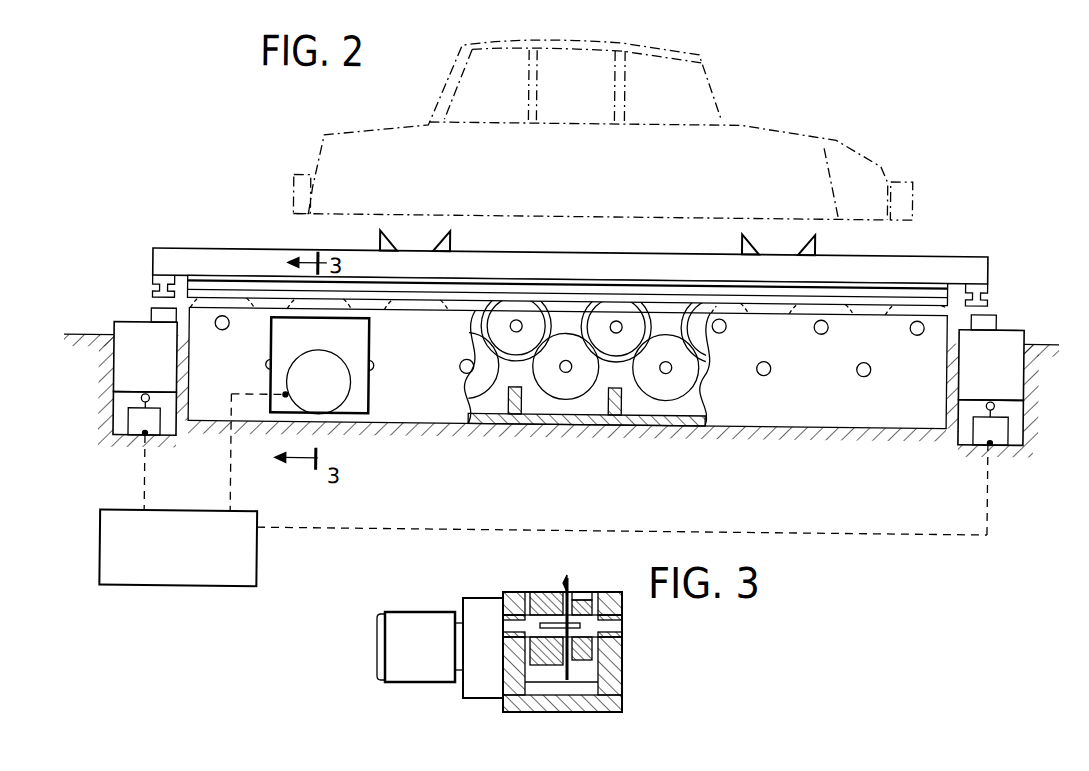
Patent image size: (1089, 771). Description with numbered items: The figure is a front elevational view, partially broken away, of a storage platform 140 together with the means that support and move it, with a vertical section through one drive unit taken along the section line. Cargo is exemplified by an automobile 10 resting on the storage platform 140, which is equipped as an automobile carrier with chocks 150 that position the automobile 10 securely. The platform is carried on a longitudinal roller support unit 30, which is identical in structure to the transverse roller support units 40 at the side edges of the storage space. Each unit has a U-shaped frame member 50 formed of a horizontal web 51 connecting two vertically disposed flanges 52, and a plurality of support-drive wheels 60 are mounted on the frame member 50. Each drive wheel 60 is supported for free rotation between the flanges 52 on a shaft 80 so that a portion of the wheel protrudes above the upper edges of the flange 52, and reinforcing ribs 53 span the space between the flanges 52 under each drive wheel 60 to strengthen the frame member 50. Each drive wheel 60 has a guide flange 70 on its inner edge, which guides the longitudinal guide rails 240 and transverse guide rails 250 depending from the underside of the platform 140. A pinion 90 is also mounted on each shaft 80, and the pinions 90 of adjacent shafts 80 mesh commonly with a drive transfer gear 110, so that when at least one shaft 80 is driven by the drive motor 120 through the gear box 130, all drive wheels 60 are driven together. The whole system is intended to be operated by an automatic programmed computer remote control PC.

In FIG. 2, the automobile 10 is at (743, 137).
In FIG. 2, the longitudinal roller support unit 30 is at (893, 405).
In FIG. 2, the transverse roller support unit 40 is at (127, 360).
In FIG. 2, the frame member 50 is at (801, 405).
In FIG. 3, the horizontal web 51 is at (603, 712).
In FIG. 3, the flange 52 is at (612, 672).
In FIG. 2, the reinforcing rib 53 is at (513, 411).
In FIG. 3, the reinforcing rib 53 is at (548, 688).
In FIG. 2, the support-drive wheel 60 is at (420, 298).
In FIG. 3, the support-drive wheel 60 is at (548, 592).
In FIG. 3, the guide flange 70 is at (568, 584).
In FIG. 2, the shaft 80 is at (426, 317).
In FIG. 3, the shaft 80 is at (595, 643).
In FIG. 3, the pinion 90 is at (593, 597).
In FIG. 2, the drive transfer gear 110 is at (567, 396).
In FIG. 2, the drive motor 120 is at (331, 398).
In FIG. 3, the drive motor 120 is at (396, 628).
In FIG. 2, the gear box 130 is at (372, 378).
In FIG. 3, the gear box 130 is at (474, 700).
In FIG. 2, the storage platform 140 is at (227, 253).
In FIG. 2, the chock 150 is at (378, 240).
In FIG. 2, the longitudinal guide rail 240 is at (935, 284).
In FIG. 2, the transverse guide rail 250 is at (158, 286).
In FIG. 2, the programmed computer remote control PC is at (249, 518).